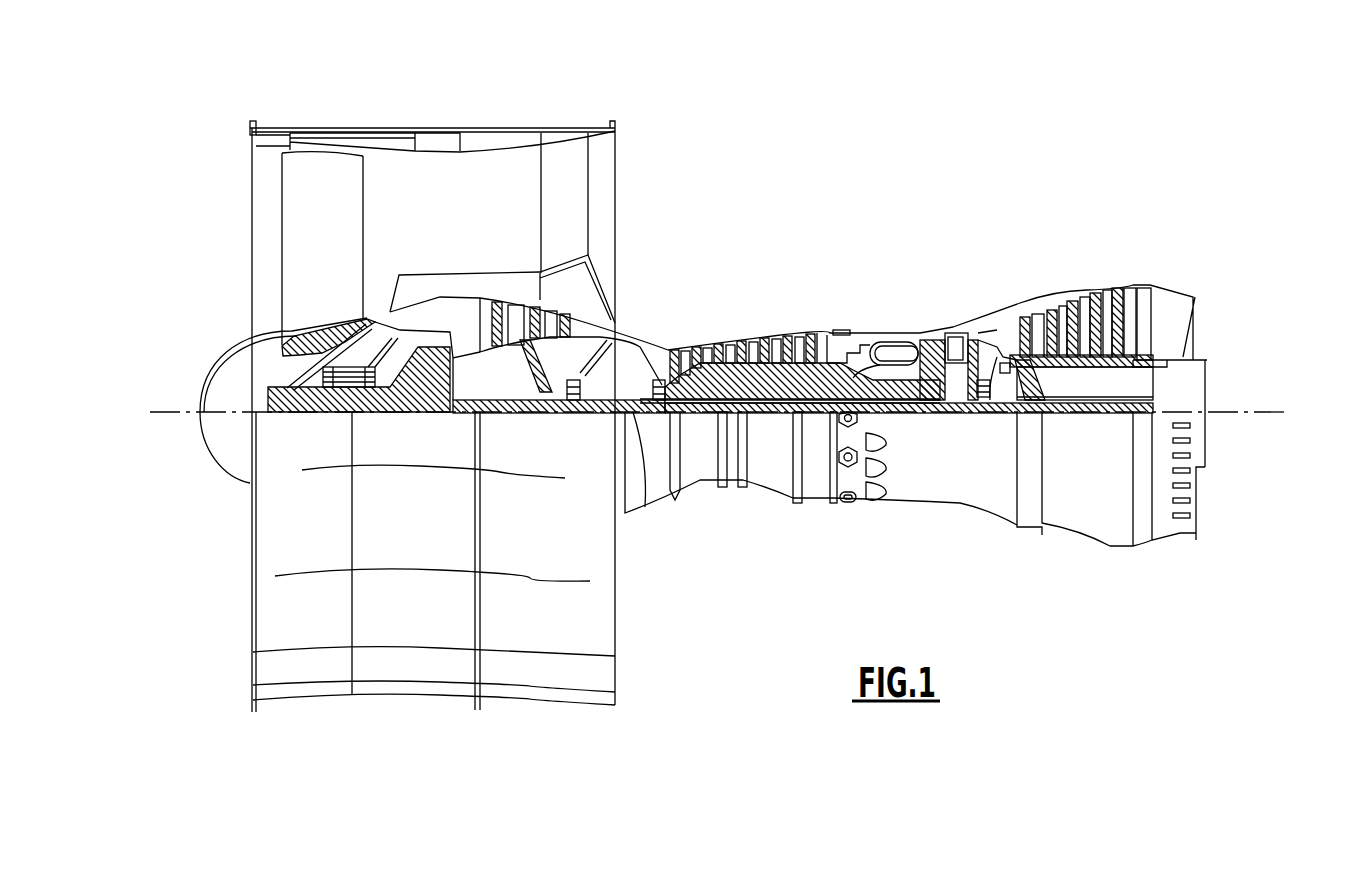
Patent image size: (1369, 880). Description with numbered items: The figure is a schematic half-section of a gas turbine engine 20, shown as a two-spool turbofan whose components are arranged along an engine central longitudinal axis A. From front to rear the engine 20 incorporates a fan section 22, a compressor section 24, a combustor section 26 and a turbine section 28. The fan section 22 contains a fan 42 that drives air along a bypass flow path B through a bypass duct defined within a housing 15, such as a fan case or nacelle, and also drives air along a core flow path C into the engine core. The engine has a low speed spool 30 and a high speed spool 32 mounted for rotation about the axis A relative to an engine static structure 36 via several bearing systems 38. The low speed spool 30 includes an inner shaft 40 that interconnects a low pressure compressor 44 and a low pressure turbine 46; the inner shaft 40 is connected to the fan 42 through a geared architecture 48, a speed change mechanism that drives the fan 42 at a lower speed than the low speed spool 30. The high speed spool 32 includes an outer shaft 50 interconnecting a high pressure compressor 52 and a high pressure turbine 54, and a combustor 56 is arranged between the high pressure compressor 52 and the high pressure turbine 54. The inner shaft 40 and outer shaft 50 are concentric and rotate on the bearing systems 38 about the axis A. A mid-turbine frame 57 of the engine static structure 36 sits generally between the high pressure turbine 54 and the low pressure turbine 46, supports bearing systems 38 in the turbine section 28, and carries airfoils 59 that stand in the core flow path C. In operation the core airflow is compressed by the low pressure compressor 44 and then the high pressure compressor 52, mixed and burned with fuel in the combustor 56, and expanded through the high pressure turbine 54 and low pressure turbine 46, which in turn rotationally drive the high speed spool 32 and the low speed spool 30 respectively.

The gas turbine engine 20 is at (898, 178).
The fan section 22 is at (364, 120).
The housing 15 is at (435, 130).
The fan 42 is at (337, 255).
The low pressure compressor 44 is at (535, 322).
The compressor section 24 is at (670, 318).
The high pressure compressor 52 is at (752, 342).
The high speed spool 32 is at (812, 372).
The low speed spool 30 is at (771, 420).
The combustor section 26 is at (889, 302).
The combustor 56 is at (890, 352).
The high pressure turbine 54 is at (953, 330).
The mid-turbine frame 57 is at (995, 320).
The turbine section 28 is at (1035, 272).
The low pressure turbine 46 is at (1083, 295).
The airfoils 59 is at (996, 343).
The geared architecture 48 is at (443, 393).
The bearing systems 38 is at (578, 387).
The inner shaft 40 is at (645, 507).
The engine static structure 36 is at (812, 503).
The outer shaft 50 is at (903, 398).
The engine central longitudinal axis A is at (1268, 412).
The bypass flow path B is at (398, 202).
The core flow path C is at (440, 311).